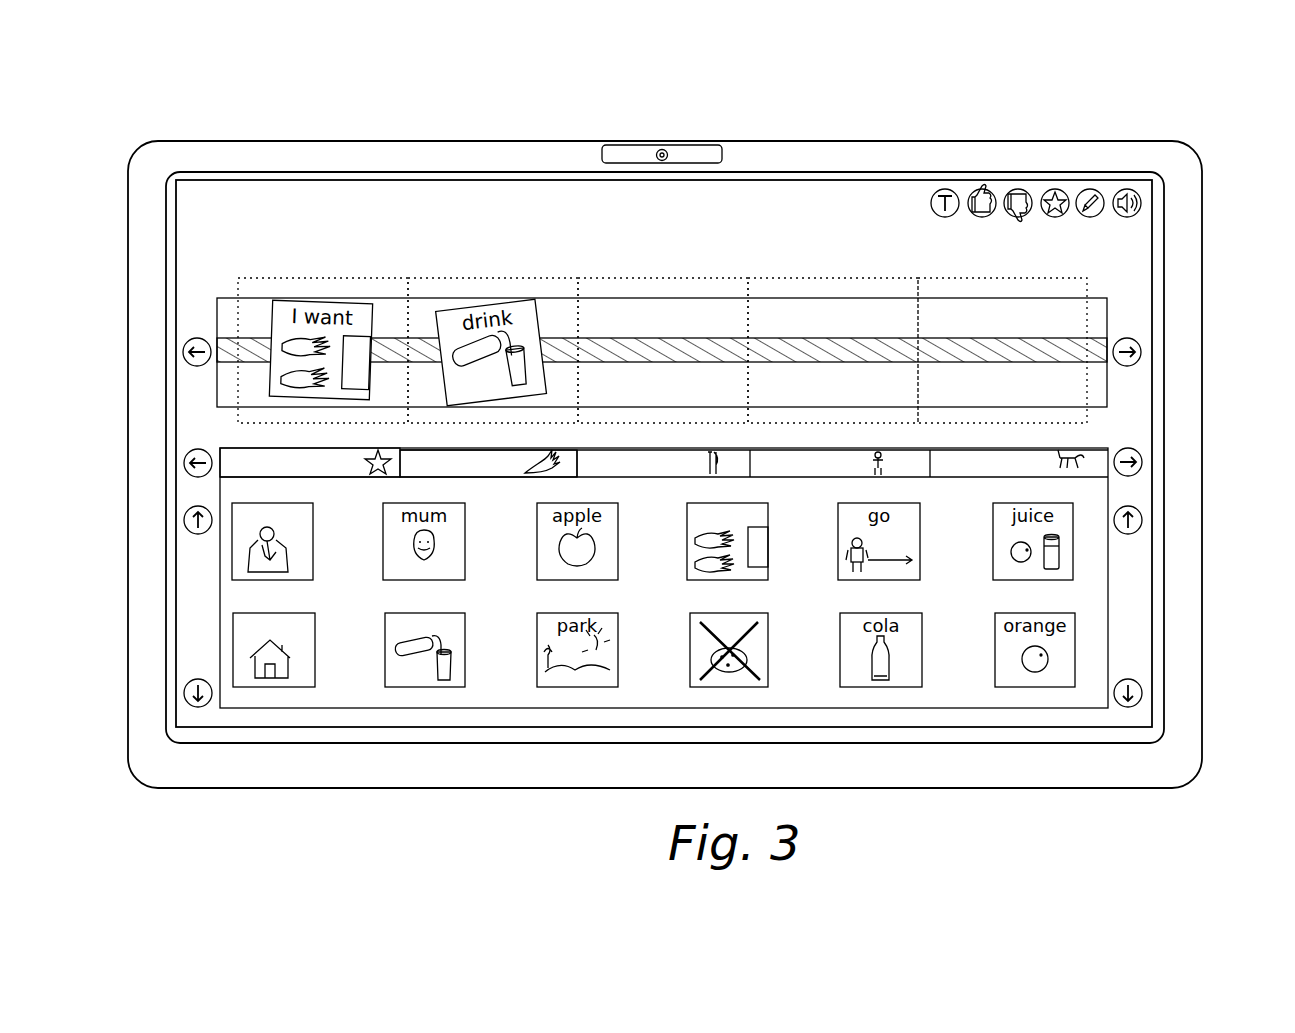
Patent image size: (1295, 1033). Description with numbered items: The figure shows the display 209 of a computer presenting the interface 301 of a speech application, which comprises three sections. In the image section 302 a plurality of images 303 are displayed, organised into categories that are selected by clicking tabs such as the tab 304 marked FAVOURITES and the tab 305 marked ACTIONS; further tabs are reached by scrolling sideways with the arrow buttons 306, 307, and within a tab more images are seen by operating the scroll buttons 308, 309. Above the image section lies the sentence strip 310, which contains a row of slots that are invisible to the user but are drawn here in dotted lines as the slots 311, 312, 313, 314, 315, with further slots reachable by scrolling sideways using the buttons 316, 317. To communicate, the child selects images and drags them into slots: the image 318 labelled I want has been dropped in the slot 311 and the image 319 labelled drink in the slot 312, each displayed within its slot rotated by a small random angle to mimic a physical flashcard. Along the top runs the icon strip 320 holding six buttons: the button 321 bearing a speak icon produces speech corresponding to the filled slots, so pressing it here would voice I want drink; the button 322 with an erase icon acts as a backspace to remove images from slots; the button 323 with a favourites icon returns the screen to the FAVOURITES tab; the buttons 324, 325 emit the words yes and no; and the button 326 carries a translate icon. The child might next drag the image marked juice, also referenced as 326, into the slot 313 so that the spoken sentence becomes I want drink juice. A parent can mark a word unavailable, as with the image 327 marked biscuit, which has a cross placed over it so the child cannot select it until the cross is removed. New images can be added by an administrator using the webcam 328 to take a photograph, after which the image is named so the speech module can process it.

The display 209 is at (1193, 745).
The interface 301 is at (857, 227).
The image section 302 is at (225, 597).
The images 303 is at (305, 518).
The tab 304 is at (343, 455).
The tab 305 is at (533, 455).
The arrow button 306 is at (184, 463).
The arrow button 307 is at (1140, 460).
The scroll button 308 is at (1140, 520).
The scroll button 309 is at (1140, 690).
The sentence strip 310 is at (242, 307).
The slot 311 is at (343, 292).
The slot 312 is at (497, 292).
The slot 313 is at (678, 292).
The slot 314 is at (812, 292).
The slot 315 is at (997, 288).
The button 316 is at (183, 352).
The button 317 is at (1137, 352).
The image 318 is at (752, 578).
The image 319 is at (395, 628).
The icon strip 320 is at (217, 197).
The button 321 is at (1127, 189).
The button 322 is at (1090, 189).
The button 323 is at (1055, 189).
The button 324 is at (982, 189).
The button 325 is at (1018, 189).
The button 326 is at (945, 189).
The image 327 is at (762, 638).
The webcam 328 is at (680, 152).